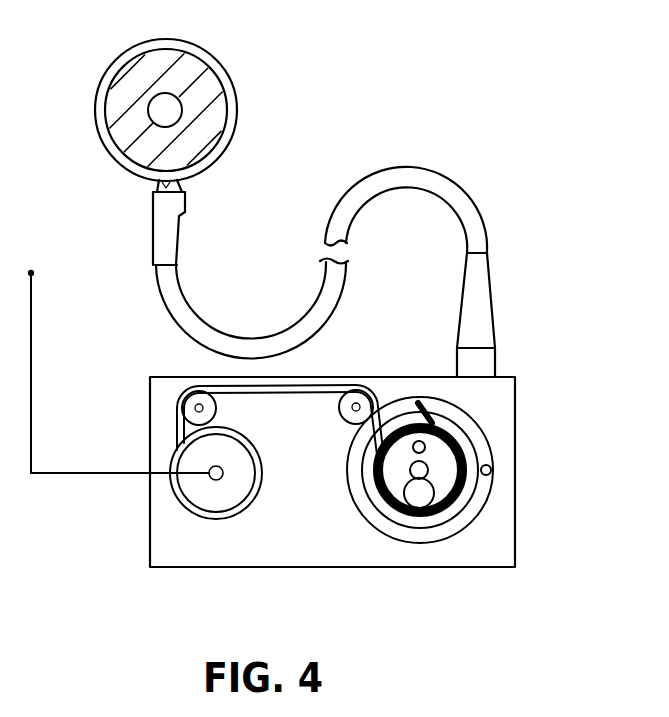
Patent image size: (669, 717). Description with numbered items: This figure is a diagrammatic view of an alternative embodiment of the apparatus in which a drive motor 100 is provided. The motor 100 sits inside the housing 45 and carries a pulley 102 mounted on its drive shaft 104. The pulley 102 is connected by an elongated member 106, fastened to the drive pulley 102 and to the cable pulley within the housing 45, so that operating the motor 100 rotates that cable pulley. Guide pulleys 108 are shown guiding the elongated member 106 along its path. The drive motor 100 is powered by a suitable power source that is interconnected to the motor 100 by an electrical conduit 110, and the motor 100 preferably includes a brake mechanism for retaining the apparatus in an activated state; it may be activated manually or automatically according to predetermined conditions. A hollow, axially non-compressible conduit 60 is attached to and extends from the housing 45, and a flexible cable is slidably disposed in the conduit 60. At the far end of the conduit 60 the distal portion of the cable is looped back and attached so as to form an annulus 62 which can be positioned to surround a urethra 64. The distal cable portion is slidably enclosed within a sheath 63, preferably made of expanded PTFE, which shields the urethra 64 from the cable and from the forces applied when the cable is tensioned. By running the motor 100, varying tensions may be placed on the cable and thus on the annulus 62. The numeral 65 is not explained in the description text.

The housing 45 is at (379, 472).
The conduit 60 is at (325, 256).
The annulus 62 is at (182, 100).
The sheath 63 is at (210, 100).
The urethra 64 is at (207, 109).
The spool hub 65 is at (220, 110).
The motor 100 is at (247, 497).
The pulley 102 is at (250, 473).
The drive shaft 104 is at (267, 487).
The elongated member 106 is at (287, 387).
The guide pulleys 108 is at (277, 415).
The electrical conduit 110 is at (119, 372).